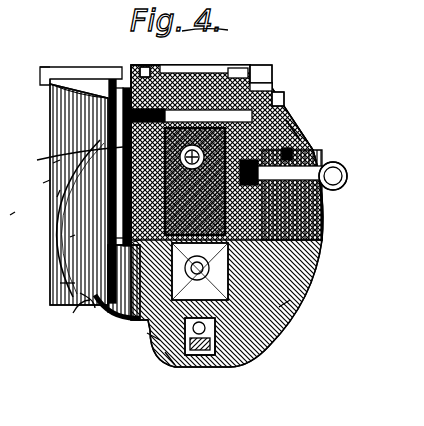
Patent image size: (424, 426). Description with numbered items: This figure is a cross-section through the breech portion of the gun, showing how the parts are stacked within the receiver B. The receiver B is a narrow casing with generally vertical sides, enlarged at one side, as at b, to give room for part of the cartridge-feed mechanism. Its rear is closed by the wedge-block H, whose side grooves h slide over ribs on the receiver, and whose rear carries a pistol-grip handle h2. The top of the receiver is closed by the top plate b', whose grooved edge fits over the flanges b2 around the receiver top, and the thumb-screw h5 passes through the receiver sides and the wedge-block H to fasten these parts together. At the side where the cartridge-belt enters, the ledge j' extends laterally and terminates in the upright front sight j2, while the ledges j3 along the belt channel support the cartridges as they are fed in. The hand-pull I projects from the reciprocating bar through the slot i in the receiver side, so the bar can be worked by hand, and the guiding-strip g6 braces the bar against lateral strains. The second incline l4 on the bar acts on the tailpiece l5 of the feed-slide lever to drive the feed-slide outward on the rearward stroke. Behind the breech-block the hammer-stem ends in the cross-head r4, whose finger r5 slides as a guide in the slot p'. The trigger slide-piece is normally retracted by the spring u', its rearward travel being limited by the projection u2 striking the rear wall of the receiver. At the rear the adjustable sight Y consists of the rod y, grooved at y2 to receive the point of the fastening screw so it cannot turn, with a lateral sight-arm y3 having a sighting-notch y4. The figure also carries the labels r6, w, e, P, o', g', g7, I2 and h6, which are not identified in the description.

The receiver B is at (292, 300).
The vertically-adjustable sight Y is at (81, 64).
The upright portion j2 is at (60, 105).
The wedge-block H is at (195, 181).
The spring box r6 is at (292, 255).
The projection u2 is at (202, 358).
The screw w is at (232, 358).
The spring u' is at (257, 352).
The hand-pull I is at (347, 173).
The collar e is at (294, 152).
The top plate b' is at (263, 62).
The handle h2 is at (240, 66).
The ribs or flanges b2 is at (255, 86).
The thumb-screw h5 is at (284, 99).
The guiding-strip g6 is at (284, 137).
The enlarged portion of receiver b is at (316, 136).
The ledges j3 is at (160, 57).
The cam hook P is at (117, 307).
The finger r5 is at (80, 293).
The slot p' is at (58, 330).
The pin o' is at (47, 292).
The tailpiece l5 is at (147, 333).
The second incline l4 is at (167, 360).
The cross-head r4 is at (279, 307).
The lever g' is at (67, 218).
The lever arm g7 is at (63, 155).
The groove y2 is at (53, 163).
The pin I2 is at (43, 183).
The slot i is at (8, 220).
The ledge j' is at (38, 169).
The rod y is at (70, 237).
The lever pivot h6 is at (125, 232).
The grooves h is at (133, 242).
The lateral sight-arm y3 is at (47, 73).
The notch y4 is at (50, 67).